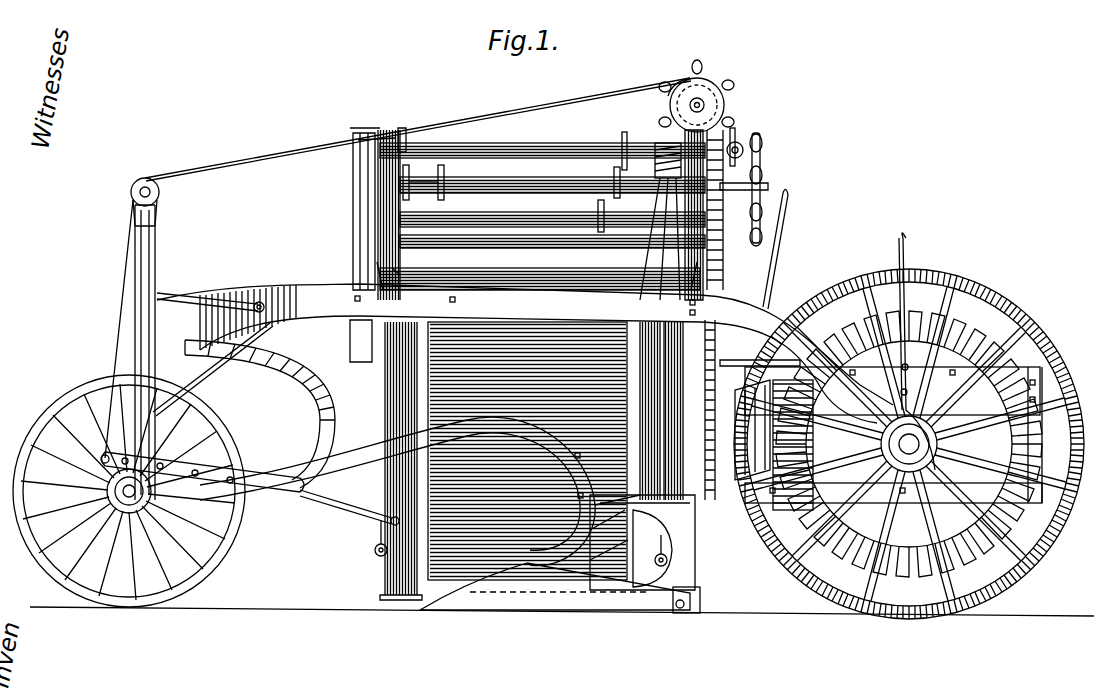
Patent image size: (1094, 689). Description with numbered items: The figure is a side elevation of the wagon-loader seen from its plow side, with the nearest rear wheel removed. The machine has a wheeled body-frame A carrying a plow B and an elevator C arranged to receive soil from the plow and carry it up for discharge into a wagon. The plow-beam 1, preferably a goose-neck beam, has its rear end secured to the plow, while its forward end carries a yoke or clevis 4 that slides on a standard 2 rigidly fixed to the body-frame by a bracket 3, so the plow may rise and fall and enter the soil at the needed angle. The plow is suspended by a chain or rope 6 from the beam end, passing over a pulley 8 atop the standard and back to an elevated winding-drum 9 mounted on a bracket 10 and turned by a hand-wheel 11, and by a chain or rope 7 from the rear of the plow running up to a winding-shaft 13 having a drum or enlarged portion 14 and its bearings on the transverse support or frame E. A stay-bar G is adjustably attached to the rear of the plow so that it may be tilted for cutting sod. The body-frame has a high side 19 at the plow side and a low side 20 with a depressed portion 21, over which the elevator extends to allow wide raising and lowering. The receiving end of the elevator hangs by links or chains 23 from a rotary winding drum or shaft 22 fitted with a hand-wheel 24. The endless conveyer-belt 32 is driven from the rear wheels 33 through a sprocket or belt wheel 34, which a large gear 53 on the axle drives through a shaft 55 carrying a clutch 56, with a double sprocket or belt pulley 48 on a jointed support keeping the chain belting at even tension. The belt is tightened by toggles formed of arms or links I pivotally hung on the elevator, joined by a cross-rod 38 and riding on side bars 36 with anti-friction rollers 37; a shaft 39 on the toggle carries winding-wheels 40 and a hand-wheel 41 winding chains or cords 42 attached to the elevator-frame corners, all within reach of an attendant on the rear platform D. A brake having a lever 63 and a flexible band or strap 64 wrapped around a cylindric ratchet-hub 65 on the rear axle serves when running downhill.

The plow-beam 1 is at (308, 468).
The standard 2 is at (157, 276).
The bracket 3 is at (203, 298).
The yoke or clevis 4 is at (160, 455).
The raising and lowering chain or rope 6 is at (305, 158).
The raising and lowering chain or rope 7 is at (648, 145).
The pulley 8 is at (145, 192).
The winding-drum 9 is at (702, 88).
The bracket 10 is at (672, 130).
The hand-wheel 11 is at (731, 90).
The winding-shaft 13 is at (530, 148).
The drum or enlarged portion 14 is at (621, 140).
The high side of body-frame 19 is at (525, 353).
The low side of body-frame 20 is at (332, 410).
The depressed portion 21 is at (360, 505).
The rotary winding drum or shaft 22 is at (404, 130).
The links or chains or ropes 23 is at (402, 272).
The hand-wheel 24 is at (762, 280).
The endless carrier or conveyer-belt 32 is at (527, 451).
The rear wheels 33 is at (909, 444).
The sprocket or belt wheel 34 is at (720, 503).
The side bars of elevator-frame 36 is at (716, 340).
The anti-friction rollers 37 is at (737, 151).
The cross-rod 38 is at (555, 219).
The winding-drum or rotary shaft 39 is at (560, 175).
The winding-wheels 40 is at (445, 170).
The hand-wheel 41 is at (760, 165).
The chains or cords 42 is at (410, 200).
The double sprocket or belt pulley 48 is at (724, 260).
The large gear 53 is at (1010, 525).
The shaft 55 is at (826, 430).
The clutch 56 is at (735, 405).
The brake lever 63 is at (906, 268).
The brake band or strap 64 is at (920, 420).
The ratchet-hub 65 is at (919, 382).
The wheeled body-frame A is at (497, 365).
The plow B is at (555, 599).
The elevator C is at (538, 271).
The rear platform D is at (1040, 340).
The support or frame E is at (513, 214).
The stay-bar G is at (652, 542).
The arms or links I is at (893, 435).